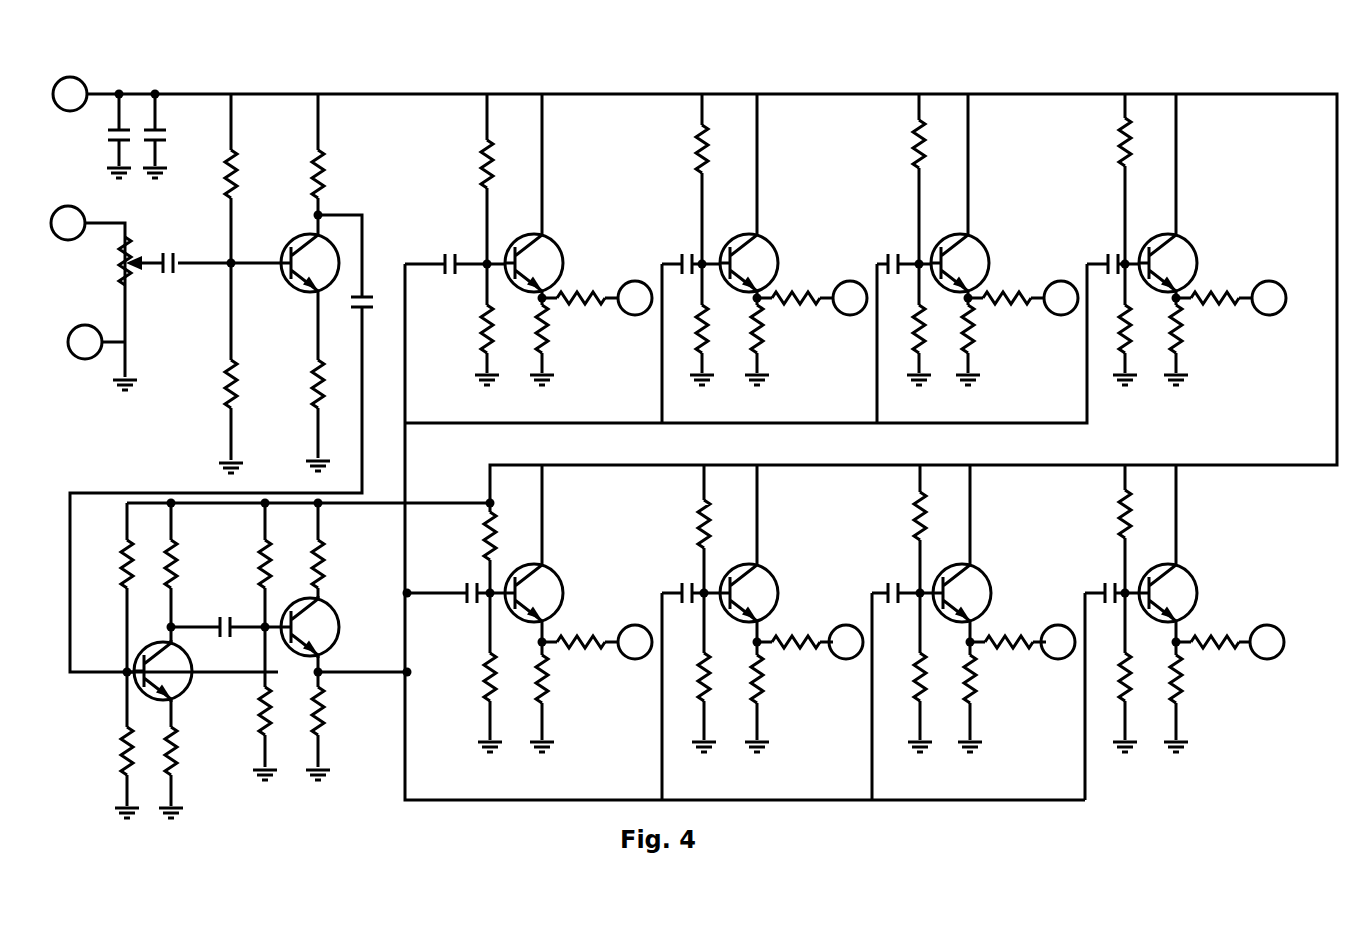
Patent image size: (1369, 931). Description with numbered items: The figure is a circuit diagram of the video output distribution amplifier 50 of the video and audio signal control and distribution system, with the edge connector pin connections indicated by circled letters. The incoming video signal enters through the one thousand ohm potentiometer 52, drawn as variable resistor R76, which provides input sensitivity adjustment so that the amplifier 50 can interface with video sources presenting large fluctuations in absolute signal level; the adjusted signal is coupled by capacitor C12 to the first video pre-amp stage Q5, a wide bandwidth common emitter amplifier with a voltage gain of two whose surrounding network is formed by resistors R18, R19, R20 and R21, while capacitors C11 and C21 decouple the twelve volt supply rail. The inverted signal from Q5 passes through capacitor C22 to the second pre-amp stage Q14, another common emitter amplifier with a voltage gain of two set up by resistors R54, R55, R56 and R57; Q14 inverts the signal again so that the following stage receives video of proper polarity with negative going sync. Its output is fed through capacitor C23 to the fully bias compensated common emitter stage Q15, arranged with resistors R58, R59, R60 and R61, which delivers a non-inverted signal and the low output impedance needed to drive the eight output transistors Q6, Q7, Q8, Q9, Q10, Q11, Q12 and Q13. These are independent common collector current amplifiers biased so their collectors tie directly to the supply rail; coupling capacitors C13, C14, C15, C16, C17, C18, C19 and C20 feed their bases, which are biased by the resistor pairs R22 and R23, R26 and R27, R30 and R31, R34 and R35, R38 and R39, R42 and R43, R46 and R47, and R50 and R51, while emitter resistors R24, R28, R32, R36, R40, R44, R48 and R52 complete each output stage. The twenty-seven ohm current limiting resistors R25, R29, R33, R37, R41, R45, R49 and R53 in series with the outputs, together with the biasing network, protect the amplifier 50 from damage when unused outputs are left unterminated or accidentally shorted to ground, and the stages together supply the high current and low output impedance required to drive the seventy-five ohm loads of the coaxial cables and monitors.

The video output distribution amplifier 50 is at (693, 424).
The potentiometer 52 is at (120, 268).
The resistor R18 is at (207, 178).
The resistor R19 is at (210, 368).
The resistor R20 is at (288, 154).
The resistor R21 is at (287, 385).
The resistor R22 is at (461, 179).
The resistor R23 is at (464, 324).
The resistor R24 is at (567, 341).
The current limiting resistor R25 is at (597, 290).
The resistor R26 is at (676, 179).
The resistor R27 is at (698, 328).
The resistor R28 is at (781, 341).
The current limiting resistor R29 is at (812, 290).
The resistor R30 is at (892, 179).
The resistor R31 is at (915, 330).
The resistor R32 is at (975, 322).
The current limiting resistor R33 is at (1023, 290).
The resistor R34 is at (1095, 179).
The resistor R35 is at (1122, 308).
The resistor R36 is at (1180, 318).
The current limiting resistor R37 is at (1231, 290).
The resistor R38 is at (457, 552).
The resistor R39 is at (464, 672).
The resistor R40 is at (567, 697).
The current limiting resistor R41 is at (597, 634).
The resistor R42 is at (674, 529).
The resistor R43 is at (700, 676).
The resistor R44 is at (782, 697).
The current limiting resistor R45 is at (810, 633).
The resistor R46 is at (893, 529).
The resistor R47 is at (915, 680).
The resistor R48 is at (996, 697).
The current limiting resistor R49 is at (1022, 634).
The resistor R50 is at (1103, 529).
The resistor R51 is at (1120, 680).
The resistor R52 is at (1202, 697).
The current limiting resistor R53 is at (1230, 633).
The resistor R54 is at (123, 543).
The resistor R55 is at (101, 745).
The resistor R56 is at (199, 565).
The resistor R57 is at (196, 772).
The resistor R58 is at (262, 546).
The resistor R59 is at (239, 703).
The resistor R60 is at (350, 550).
The resistor R61 is at (343, 726).
The variable resistor R76 is at (99, 313).
The capacitor C11 is at (105, 136).
The capacitor C12 is at (185, 250).
The capacitor C13 is at (446, 251).
The capacitor C14 is at (677, 251).
The capacitor C15 is at (891, 251).
The capacitor C16 is at (1100, 251).
The capacitor C17 is at (448, 585).
The capacitor C18 is at (673, 580).
The capacitor C19 is at (891, 580).
The capacitor C20 is at (1097, 580).
The capacitor C21 is at (182, 136).
The capacitor C22 is at (372, 305).
The capacitor C23 is at (218, 610).
The first video pre-amp stage Q5 is at (294, 257).
The video output transistor Q6 is at (536, 196).
The video output transistor Q7 is at (752, 196).
The video output transistor Q8 is at (966, 196).
The video output transistor Q9 is at (1172, 196).
The video output transistor Q10 is at (549, 553).
The video output transistor Q11 is at (761, 553).
The video output transistor Q12 is at (979, 553).
The video output transistor Q13 is at (1185, 553).
The second pre-amp stage Q14 is at (187, 677).
The bias compensated common emitter amplifier stage Q15 is at (336, 634).